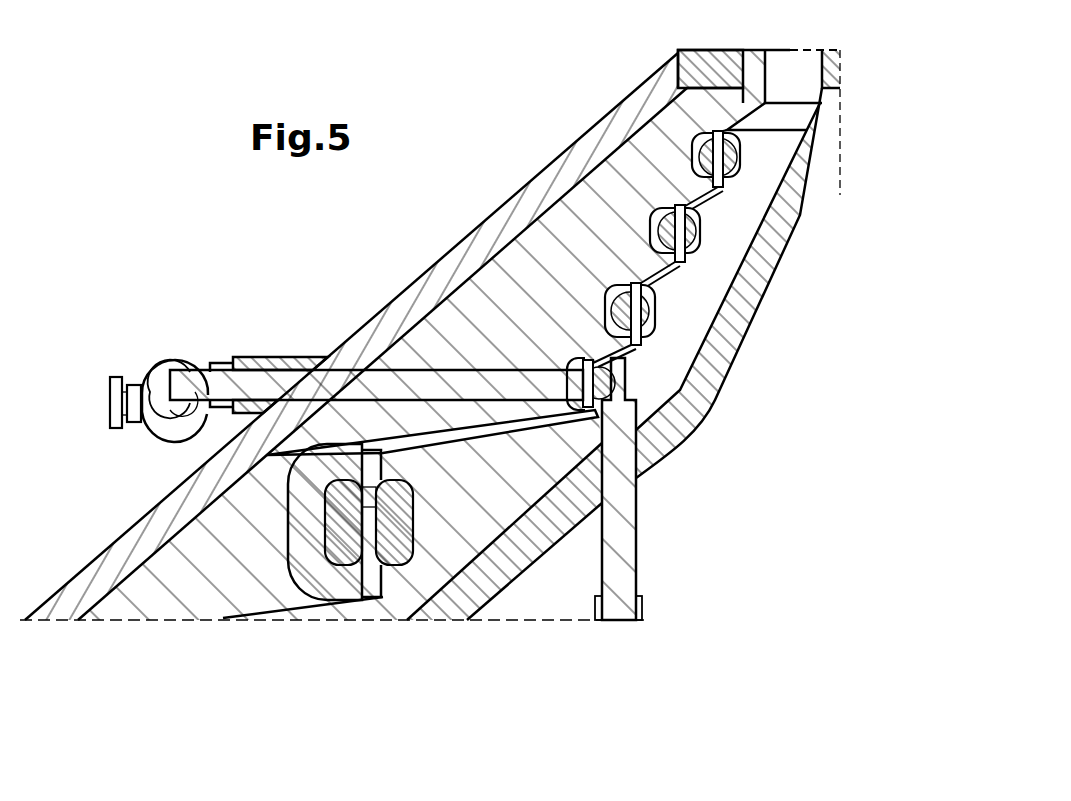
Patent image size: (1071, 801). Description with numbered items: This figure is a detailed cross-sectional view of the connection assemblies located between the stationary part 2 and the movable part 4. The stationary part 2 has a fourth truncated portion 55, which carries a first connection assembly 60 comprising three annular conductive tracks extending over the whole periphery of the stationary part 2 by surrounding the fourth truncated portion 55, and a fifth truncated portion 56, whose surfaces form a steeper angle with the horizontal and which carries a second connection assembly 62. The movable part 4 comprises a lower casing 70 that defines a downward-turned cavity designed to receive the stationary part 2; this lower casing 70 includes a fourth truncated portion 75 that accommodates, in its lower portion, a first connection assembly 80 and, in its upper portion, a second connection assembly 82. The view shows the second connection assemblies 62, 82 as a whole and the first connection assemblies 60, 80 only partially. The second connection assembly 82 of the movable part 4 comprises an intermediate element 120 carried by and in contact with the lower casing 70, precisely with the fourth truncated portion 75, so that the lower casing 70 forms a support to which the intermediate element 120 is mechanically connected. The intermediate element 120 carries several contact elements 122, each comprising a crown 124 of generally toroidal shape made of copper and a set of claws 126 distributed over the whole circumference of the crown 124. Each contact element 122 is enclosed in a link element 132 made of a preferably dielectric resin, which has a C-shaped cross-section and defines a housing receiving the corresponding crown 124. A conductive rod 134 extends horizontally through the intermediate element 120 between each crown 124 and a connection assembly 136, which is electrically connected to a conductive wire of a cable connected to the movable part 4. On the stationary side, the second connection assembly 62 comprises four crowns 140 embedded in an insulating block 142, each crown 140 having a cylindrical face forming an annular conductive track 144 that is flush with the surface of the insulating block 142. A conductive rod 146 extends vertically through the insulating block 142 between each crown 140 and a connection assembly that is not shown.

The stationary part 2 is at (672, 477).
The movable part 4 is at (338, 349).
The fourth truncated portion 55 is at (515, 563).
The fifth truncated portion 56 is at (790, 198).
The first connection assembly 60 is at (395, 603).
The second connection assembly 62 is at (652, 312).
The lower casing 70 is at (520, 178).
The fourth truncated portion 75 is at (462, 262).
The first connection assembly 80 is at (185, 568).
The second connection assembly 82 is at (623, 215).
The intermediate element 120 is at (392, 348).
The contact element 122 is at (660, 183).
The crown 124 is at (706, 160).
The claws 126 is at (755, 228).
The link element 132 is at (612, 308).
The conductive rod 134 is at (245, 356).
The connection assembly 136 is at (143, 365).
The crown 140 is at (752, 151).
The insulating block 142 is at (760, 163).
The annular conductive track 144 is at (708, 272).
The conductive rod 146 is at (623, 550).